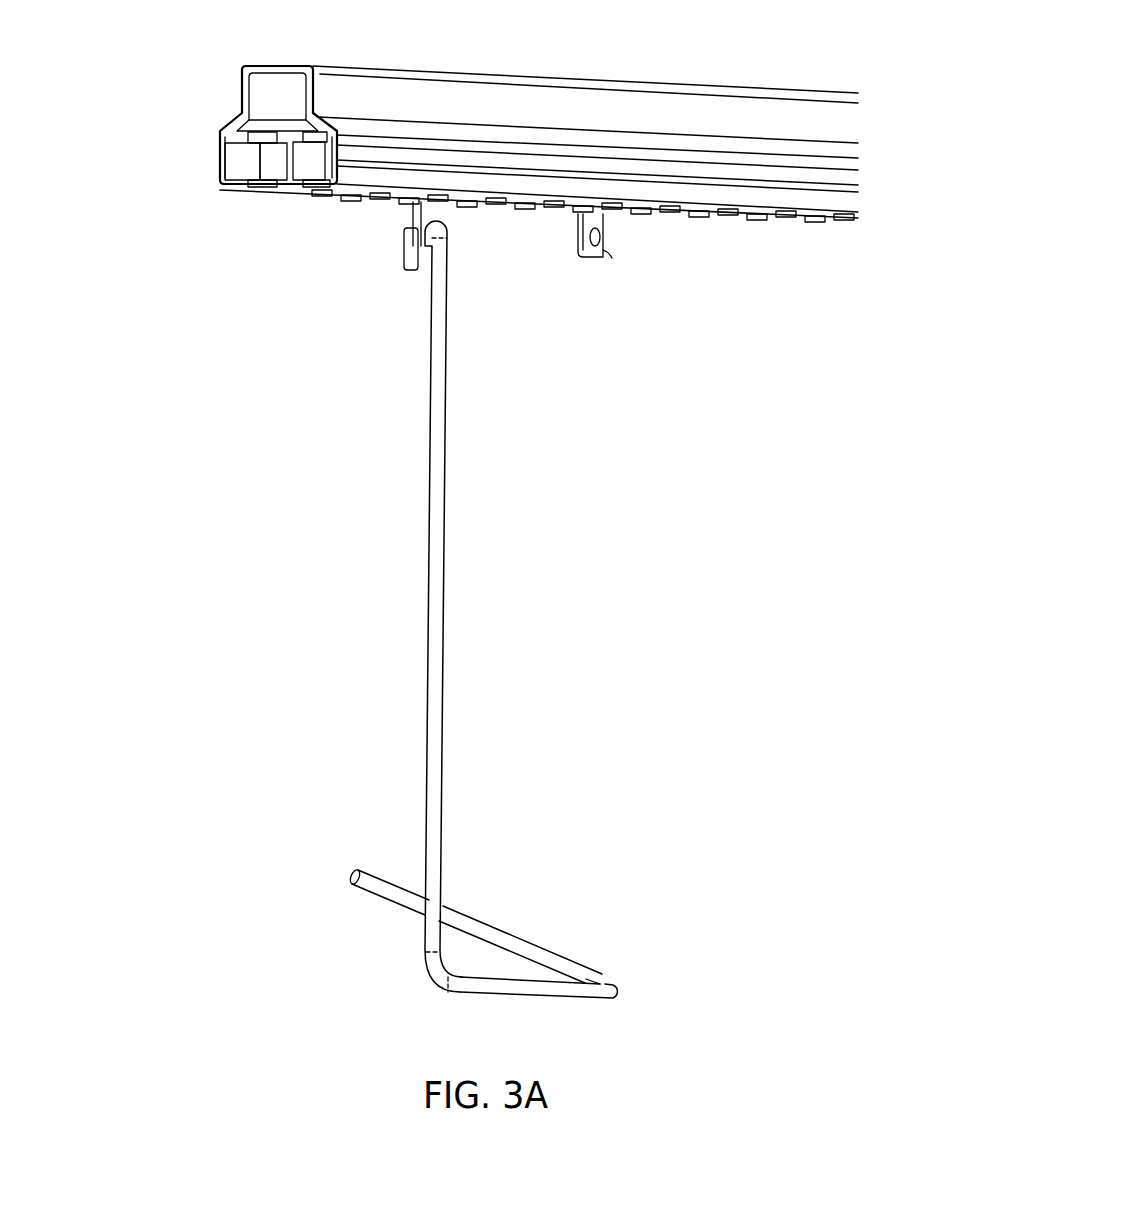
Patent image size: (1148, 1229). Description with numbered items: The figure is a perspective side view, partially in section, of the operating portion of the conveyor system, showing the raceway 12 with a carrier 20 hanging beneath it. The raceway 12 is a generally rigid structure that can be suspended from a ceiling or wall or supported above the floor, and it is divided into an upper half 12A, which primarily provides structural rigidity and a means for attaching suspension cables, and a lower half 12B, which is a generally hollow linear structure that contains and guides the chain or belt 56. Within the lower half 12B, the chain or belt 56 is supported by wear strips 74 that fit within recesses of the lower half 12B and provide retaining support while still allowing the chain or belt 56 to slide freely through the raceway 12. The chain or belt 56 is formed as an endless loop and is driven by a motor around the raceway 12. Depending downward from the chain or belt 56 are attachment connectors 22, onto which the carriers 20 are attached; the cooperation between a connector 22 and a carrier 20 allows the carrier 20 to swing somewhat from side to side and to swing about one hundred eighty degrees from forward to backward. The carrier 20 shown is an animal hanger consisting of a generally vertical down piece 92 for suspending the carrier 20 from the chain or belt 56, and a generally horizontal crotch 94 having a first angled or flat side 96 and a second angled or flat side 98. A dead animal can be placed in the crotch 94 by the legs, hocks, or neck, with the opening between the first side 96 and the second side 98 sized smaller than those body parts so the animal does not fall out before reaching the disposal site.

The raceway 12 is at (513, 79).
The upper half of raceway 12A is at (242, 80).
The lower half of raceway 12B is at (220, 147).
The wear strips 74 is at (312, 157).
The chain or belt 56 is at (310, 192).
The attachment connector 22 is at (413, 218).
The carrier 20 is at (458, 631).
The vertical down piece 92 is at (430, 390).
The second angled or flat side 98 is at (530, 938).
The crotch 94 is at (590, 980).
The first angled or flat side 96 is at (568, 999).